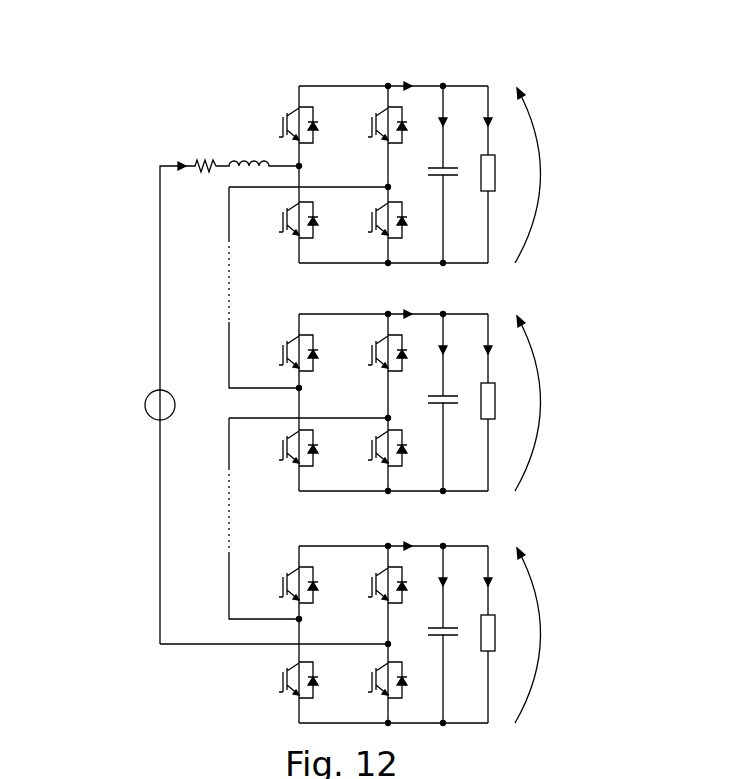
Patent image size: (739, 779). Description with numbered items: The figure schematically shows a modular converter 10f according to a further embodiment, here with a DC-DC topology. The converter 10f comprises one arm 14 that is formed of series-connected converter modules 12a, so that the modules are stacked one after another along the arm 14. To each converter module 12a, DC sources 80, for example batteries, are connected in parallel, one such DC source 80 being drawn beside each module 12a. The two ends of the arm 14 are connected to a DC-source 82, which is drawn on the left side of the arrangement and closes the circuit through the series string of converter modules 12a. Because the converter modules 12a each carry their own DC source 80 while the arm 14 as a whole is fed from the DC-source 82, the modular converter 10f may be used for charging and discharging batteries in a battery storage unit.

The modular converter 10f is at (98, 85).
The arm 14 is at (471, 58).
The converter module 12a is at (582, 228).
The DC source 80 is at (496, 178).
The DC-source 82 is at (153, 418).